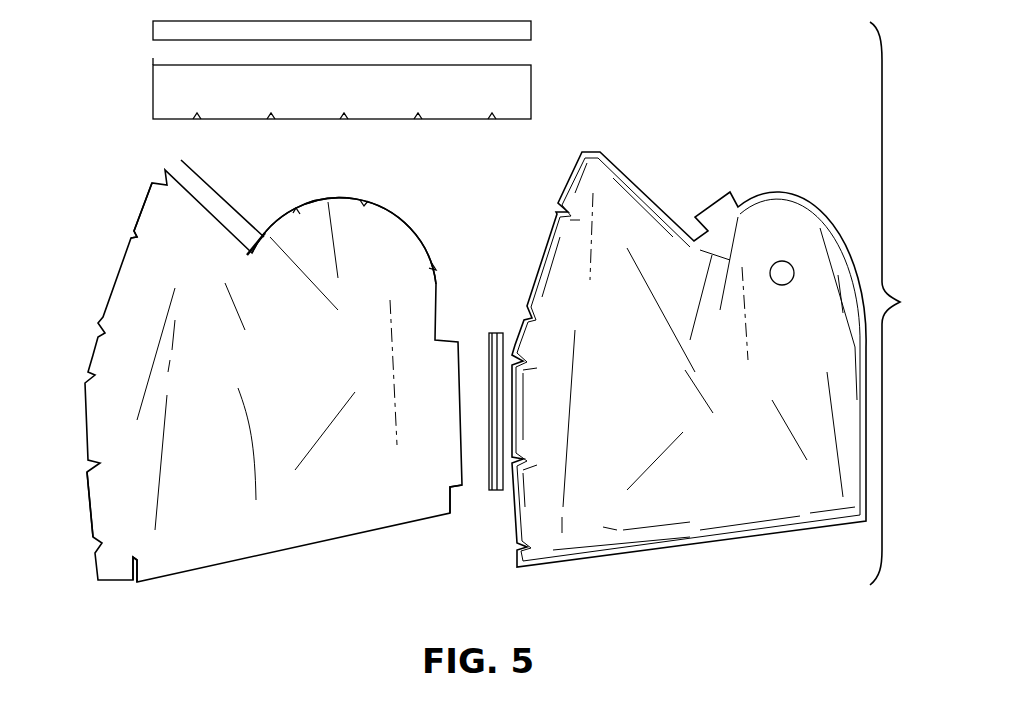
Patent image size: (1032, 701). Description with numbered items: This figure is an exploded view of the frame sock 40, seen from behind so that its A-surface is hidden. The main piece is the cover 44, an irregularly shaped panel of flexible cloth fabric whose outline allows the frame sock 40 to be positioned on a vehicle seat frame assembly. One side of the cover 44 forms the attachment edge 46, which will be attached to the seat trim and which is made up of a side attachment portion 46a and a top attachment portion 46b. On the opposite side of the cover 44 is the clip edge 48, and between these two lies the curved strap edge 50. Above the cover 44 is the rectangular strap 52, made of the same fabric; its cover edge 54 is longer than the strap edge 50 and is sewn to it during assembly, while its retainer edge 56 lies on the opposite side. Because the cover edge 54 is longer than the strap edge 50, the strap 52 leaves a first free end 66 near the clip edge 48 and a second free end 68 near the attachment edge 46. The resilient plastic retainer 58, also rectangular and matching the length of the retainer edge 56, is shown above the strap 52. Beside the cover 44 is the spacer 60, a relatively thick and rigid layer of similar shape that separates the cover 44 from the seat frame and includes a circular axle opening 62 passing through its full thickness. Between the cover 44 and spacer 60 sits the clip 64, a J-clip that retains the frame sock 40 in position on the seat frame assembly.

The frame sock 40 is at (904, 303).
The cover 44 is at (283, 553).
The attachment edge 46 is at (135, 582).
The side attachment portion 46a is at (90, 520).
The top attachment portion 46b is at (130, 245).
The clip edge 48 is at (455, 487).
The strap edge 50 is at (418, 232).
The strap 52 is at (531, 74).
The cover edge 54 is at (385, 120).
The retainer edge 56 is at (182, 63).
The retainer 58 is at (531, 30).
The spacer 60 is at (688, 510).
The axle opening 62 is at (782, 261).
The clip 64 is at (495, 330).
The first free end 66 is at (160, 120).
The second free end 68 is at (515, 120).